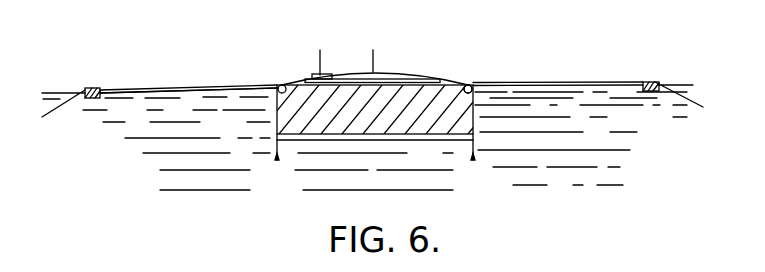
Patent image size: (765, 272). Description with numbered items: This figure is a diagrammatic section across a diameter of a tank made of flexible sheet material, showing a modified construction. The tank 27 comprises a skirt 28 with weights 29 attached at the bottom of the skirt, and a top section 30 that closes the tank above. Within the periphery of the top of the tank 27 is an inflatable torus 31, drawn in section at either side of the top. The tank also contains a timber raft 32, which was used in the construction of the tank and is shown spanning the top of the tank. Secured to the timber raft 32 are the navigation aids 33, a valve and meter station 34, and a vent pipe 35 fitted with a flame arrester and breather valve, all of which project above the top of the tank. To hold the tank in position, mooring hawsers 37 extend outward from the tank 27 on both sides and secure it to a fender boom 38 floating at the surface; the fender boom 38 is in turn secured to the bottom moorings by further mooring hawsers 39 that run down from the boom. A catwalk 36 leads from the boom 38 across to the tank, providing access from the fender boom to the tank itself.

The tank 27 is at (420, 128).
The skirt 28 is at (473, 152).
The weights 29 is at (272, 162).
The top section 30 is at (458, 82).
The inflatable torus 31 is at (282, 85).
The timber raft 32 is at (415, 80).
The navigation aids 33 is at (320, 62).
The valve and meter station 34 is at (325, 76).
The vent pipe 35 is at (375, 62).
The catwalk 36 is at (235, 95).
The mooring hawsers 37 is at (207, 86).
The fender boom 38 is at (92, 90).
The further mooring hawsers 39 is at (62, 99).